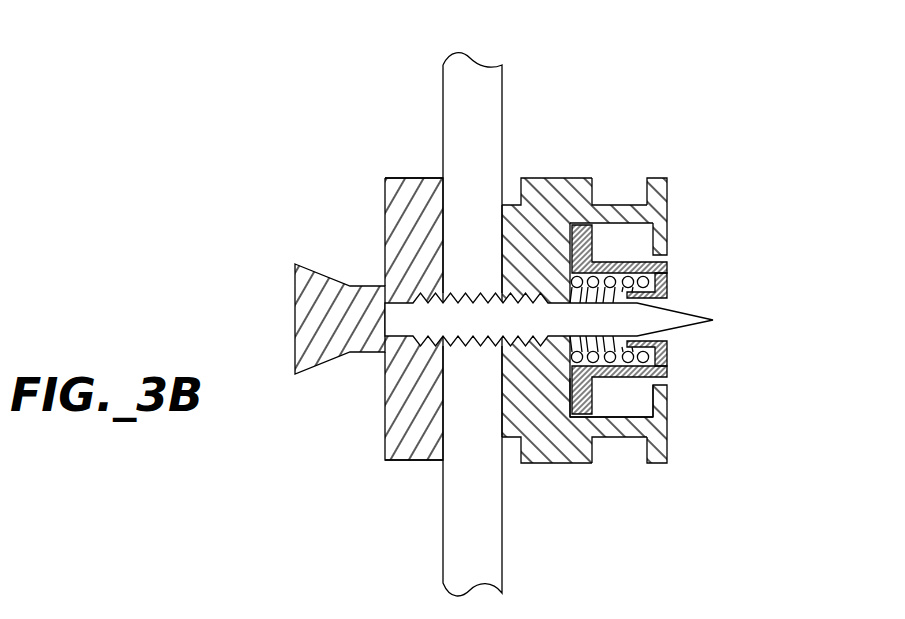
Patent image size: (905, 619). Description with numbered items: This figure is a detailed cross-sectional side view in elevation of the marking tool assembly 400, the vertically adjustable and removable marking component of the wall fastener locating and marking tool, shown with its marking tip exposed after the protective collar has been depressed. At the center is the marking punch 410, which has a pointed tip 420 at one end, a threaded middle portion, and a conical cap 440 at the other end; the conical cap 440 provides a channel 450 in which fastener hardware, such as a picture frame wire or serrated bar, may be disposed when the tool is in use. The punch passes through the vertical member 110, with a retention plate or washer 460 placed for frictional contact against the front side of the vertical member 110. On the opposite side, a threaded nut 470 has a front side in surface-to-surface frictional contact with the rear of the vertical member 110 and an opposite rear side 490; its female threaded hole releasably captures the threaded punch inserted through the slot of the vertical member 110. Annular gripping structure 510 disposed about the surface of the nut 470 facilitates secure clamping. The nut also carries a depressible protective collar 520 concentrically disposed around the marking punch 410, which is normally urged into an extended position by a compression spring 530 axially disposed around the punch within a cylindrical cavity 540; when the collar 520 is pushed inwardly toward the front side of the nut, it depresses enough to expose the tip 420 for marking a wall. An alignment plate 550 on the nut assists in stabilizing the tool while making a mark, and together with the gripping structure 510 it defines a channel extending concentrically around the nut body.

The vertical member 110 is at (502, 121).
The marking tool assembly 400 is at (390, 123).
The marking punch 410 is at (386, 383).
The pointed tip 420 is at (713, 320).
The conical cap 440 is at (294, 317).
The channel 450 is at (360, 247).
The retention plate or washer 460 is at (417, 462).
The threaded nut 470 is at (593, 175).
The rear side 490 is at (667, 243).
The annular gripping structure 510 is at (533, 178).
The depressible protective collar 520 is at (667, 280).
The compression spring 530 is at (665, 360).
The cylindrical cavity 540 is at (617, 390).
The alignment plate 550 is at (667, 195).